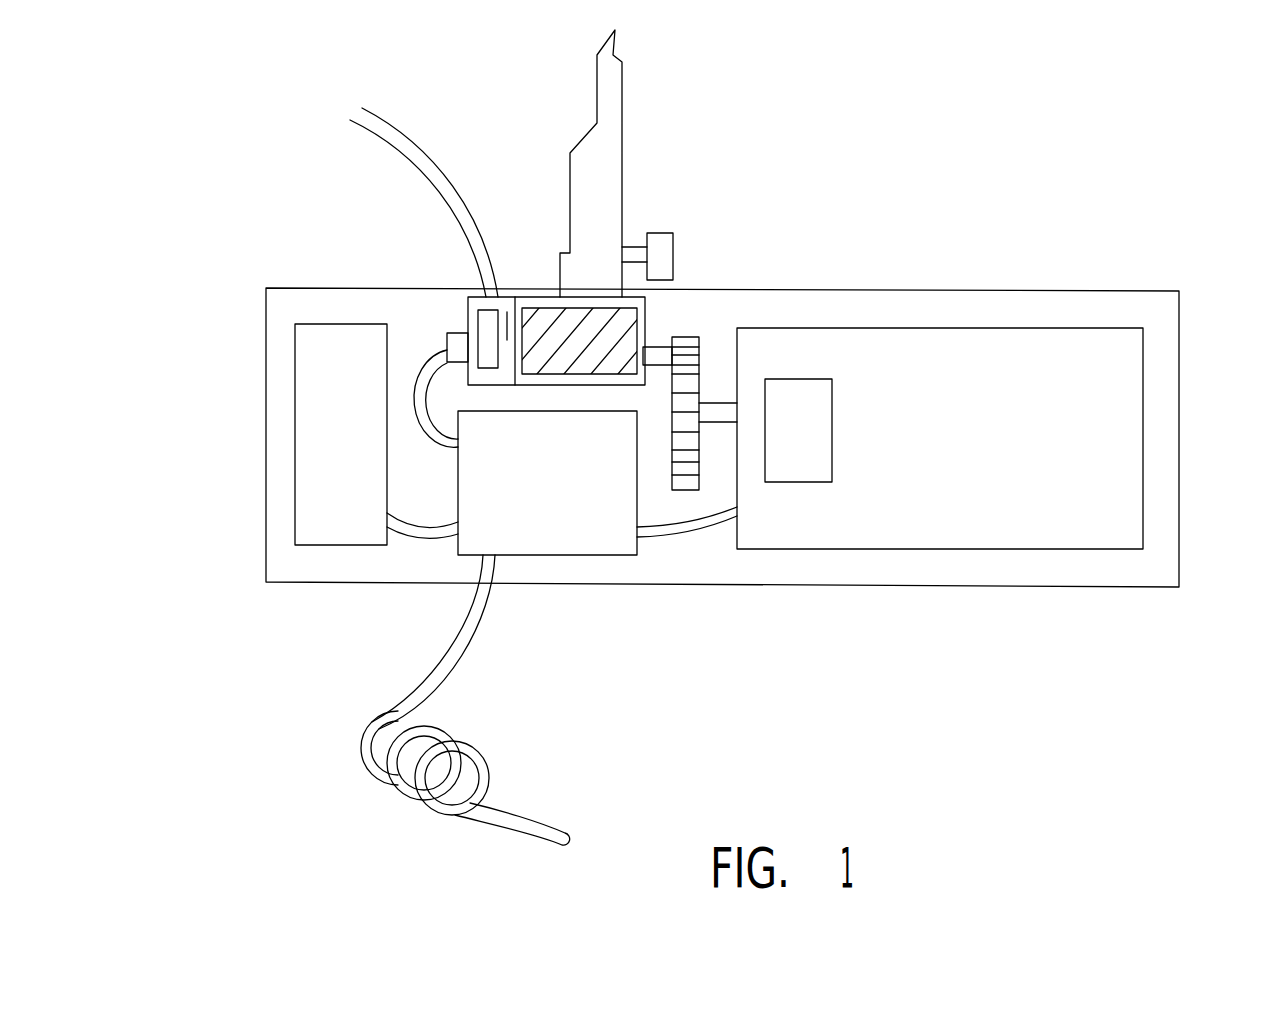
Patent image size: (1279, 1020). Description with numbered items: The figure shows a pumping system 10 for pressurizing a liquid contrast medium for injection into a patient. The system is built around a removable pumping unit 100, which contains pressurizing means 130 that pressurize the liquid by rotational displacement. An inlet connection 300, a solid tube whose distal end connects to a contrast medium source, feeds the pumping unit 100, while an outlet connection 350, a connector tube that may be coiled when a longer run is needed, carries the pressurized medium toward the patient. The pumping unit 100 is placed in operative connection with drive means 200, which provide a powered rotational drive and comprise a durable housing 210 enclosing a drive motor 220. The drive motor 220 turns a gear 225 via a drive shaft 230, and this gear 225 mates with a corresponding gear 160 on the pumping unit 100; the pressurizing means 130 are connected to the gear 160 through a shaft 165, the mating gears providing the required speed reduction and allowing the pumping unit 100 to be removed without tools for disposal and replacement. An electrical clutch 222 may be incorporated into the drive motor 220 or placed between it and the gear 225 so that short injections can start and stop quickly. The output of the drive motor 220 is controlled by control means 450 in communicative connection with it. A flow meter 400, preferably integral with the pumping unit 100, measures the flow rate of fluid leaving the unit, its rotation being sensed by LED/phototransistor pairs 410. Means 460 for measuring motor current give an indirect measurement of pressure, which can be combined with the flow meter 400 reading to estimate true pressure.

The pumping system 10 is at (1038, 237).
The removable pumping unit 100 is at (549, 295).
The pressurizing means 130 is at (540, 322).
The gear 160 is at (705, 340).
The shaft 165 is at (653, 347).
The drive means 200 is at (897, 599).
The housing 210 is at (1165, 590).
The drive motor 220 is at (1032, 550).
The electrical clutch 222 is at (832, 430).
The gear 225 is at (685, 485).
The drive shaft 230 is at (720, 415).
The inlet connection 300 is at (650, 163).
The outlet connection 350 is at (358, 112).
The flow meter 400 is at (475, 315).
The LED/phototransistor pairs 410 is at (448, 335).
The control means 450 is at (580, 545).
The means for measuring motor current 460 is at (302, 450).